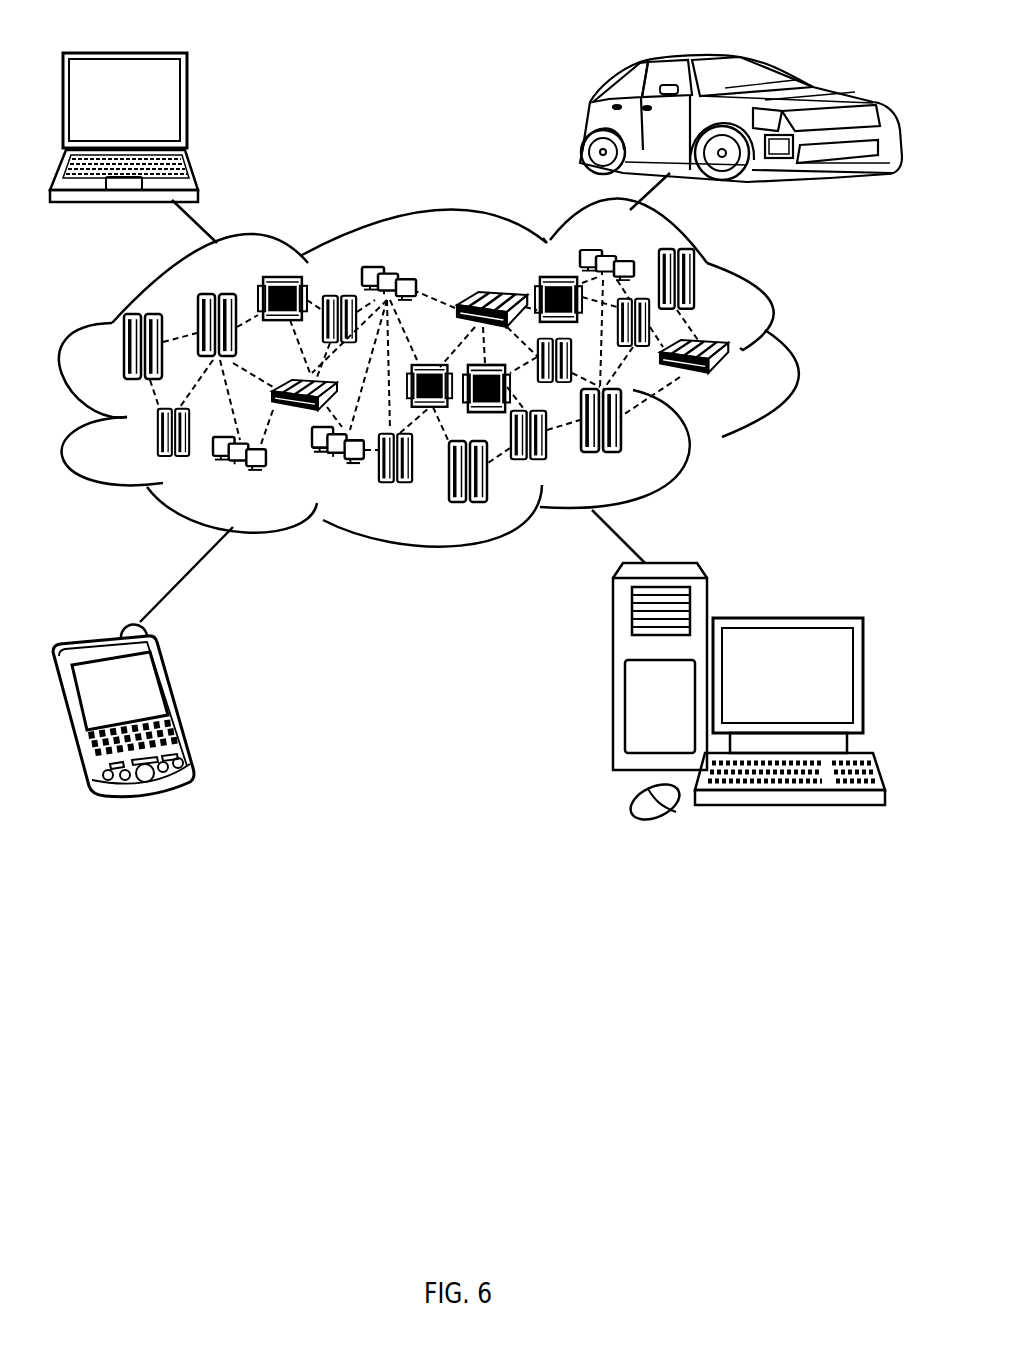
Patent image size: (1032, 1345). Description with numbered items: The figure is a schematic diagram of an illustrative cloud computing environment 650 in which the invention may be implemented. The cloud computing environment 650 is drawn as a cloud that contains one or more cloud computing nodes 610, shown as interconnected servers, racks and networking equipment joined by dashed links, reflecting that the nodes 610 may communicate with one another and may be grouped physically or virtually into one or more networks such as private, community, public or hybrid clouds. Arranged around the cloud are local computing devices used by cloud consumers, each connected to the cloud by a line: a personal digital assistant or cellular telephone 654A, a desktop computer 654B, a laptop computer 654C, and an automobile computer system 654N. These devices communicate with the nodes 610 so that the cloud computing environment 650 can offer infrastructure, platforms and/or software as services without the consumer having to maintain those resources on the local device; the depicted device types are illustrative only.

The cloud computing nodes 610 is at (741, 385).
The cloud computing environment 650 is at (787, 357).
The personal digital assistant or cellular telephone 654A is at (178, 702).
The desktop computer 654B is at (785, 618).
The laptop computer 654C is at (187, 108).
The automobile computer system 654N is at (590, 120).